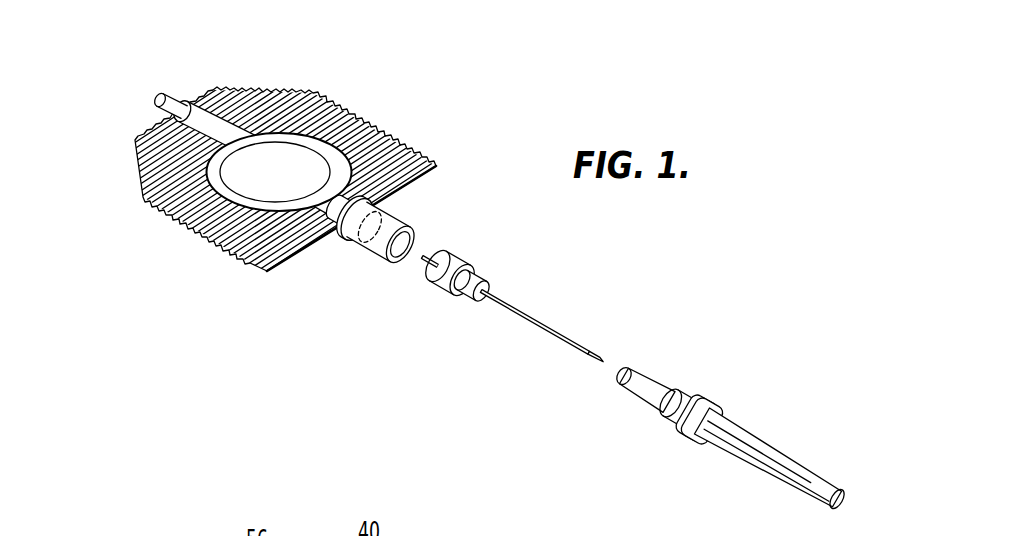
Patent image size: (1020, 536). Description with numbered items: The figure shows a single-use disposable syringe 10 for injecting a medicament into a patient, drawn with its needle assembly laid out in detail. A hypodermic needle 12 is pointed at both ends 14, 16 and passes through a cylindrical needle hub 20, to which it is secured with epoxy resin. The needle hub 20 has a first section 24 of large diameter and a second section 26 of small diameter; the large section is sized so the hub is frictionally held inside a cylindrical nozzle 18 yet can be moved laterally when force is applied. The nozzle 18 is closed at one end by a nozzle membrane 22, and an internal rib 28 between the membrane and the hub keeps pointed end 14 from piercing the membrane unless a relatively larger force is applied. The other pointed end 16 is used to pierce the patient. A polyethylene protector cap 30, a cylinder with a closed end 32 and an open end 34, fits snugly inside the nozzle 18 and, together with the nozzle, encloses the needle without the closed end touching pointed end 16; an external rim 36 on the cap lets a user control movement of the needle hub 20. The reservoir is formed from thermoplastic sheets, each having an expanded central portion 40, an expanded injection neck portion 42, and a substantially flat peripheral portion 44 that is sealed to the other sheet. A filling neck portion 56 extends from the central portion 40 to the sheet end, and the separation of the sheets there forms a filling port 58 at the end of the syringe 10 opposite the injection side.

The syringe 10 is at (276, 184).
The hypodermic needle 12 is at (522, 312).
The pointed end 14 is at (426, 257).
The pointed end 16 is at (597, 369).
The nozzle 18 is at (398, 253).
The needle hub 20 is at (509, 304).
The nozzle membrane 22 is at (372, 140).
The first section 24 is at (443, 292).
The second section 26 is at (464, 298).
The internal rib 28 is at (371, 232).
The protector cap 30 is at (729, 429).
The closed end 32 is at (833, 507).
The open end 34 is at (632, 365).
The external rim 36 is at (682, 438).
The central portion 40 is at (282, 147).
The injection neck portion 42 is at (311, 190).
The peripheral portion 44 is at (218, 190).
The filling neck portion 56 is at (223, 127).
The filling port 58 is at (156, 92).